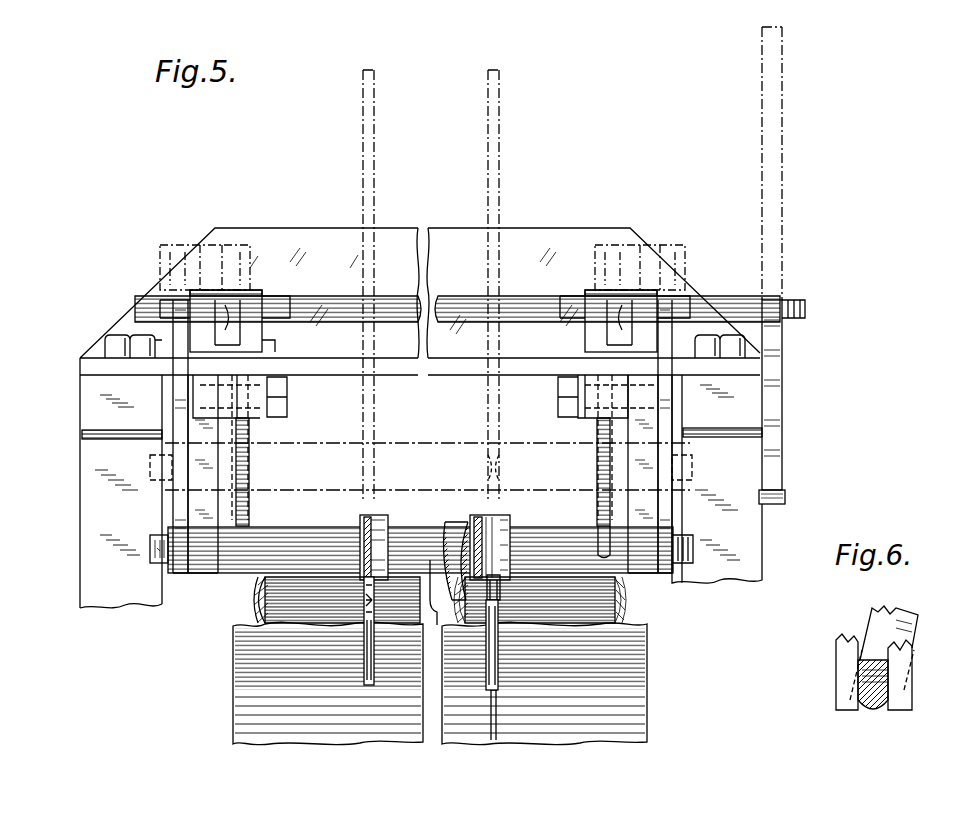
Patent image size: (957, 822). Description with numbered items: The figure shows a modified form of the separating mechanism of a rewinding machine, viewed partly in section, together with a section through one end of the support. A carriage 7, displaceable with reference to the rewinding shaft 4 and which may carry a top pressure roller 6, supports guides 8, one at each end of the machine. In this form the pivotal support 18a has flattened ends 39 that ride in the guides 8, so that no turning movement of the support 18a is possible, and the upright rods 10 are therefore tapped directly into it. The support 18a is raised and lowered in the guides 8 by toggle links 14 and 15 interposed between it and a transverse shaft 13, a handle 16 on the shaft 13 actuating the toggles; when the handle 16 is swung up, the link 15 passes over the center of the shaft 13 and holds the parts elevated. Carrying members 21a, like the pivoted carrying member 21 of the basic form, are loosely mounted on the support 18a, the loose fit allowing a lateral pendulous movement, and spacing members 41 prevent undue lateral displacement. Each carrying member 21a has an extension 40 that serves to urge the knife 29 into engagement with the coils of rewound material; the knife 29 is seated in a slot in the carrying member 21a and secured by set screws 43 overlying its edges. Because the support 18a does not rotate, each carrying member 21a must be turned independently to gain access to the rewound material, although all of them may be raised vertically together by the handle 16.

In FIG. 5, the rewinding shaft 4 is at (432, 120).
In FIG. 5, the top pressure roller 6 is at (612, 500).
In FIG. 5, the carriage 7 is at (620, 323).
In FIG. 6, the guide 8 is at (838, 657).
In FIG. 5, the upright rod 10 is at (250, 465).
In FIG. 5, the transverse shaft 13 is at (330, 300).
In FIG. 5, the toggle link 14 is at (180, 383).
In FIG. 5, the toggle link 15 is at (195, 333).
In FIG. 5, the handle 16 is at (773, 380).
In FIG. 5, the pivotal support 18a is at (547, 528).
In FIG. 5, the carrying member 21 is at (498, 595).
In FIG. 5, the carrying member 21a is at (452, 590).
In FIG. 5, the knife 29 is at (495, 670).
In FIG. 6, the flattened end 39 is at (860, 680).
In FIG. 5, the extension 40 is at (492, 600).
In FIG. 5, the spacing member 41 is at (475, 520).
In FIG. 5, the set screw 43 is at (385, 637).